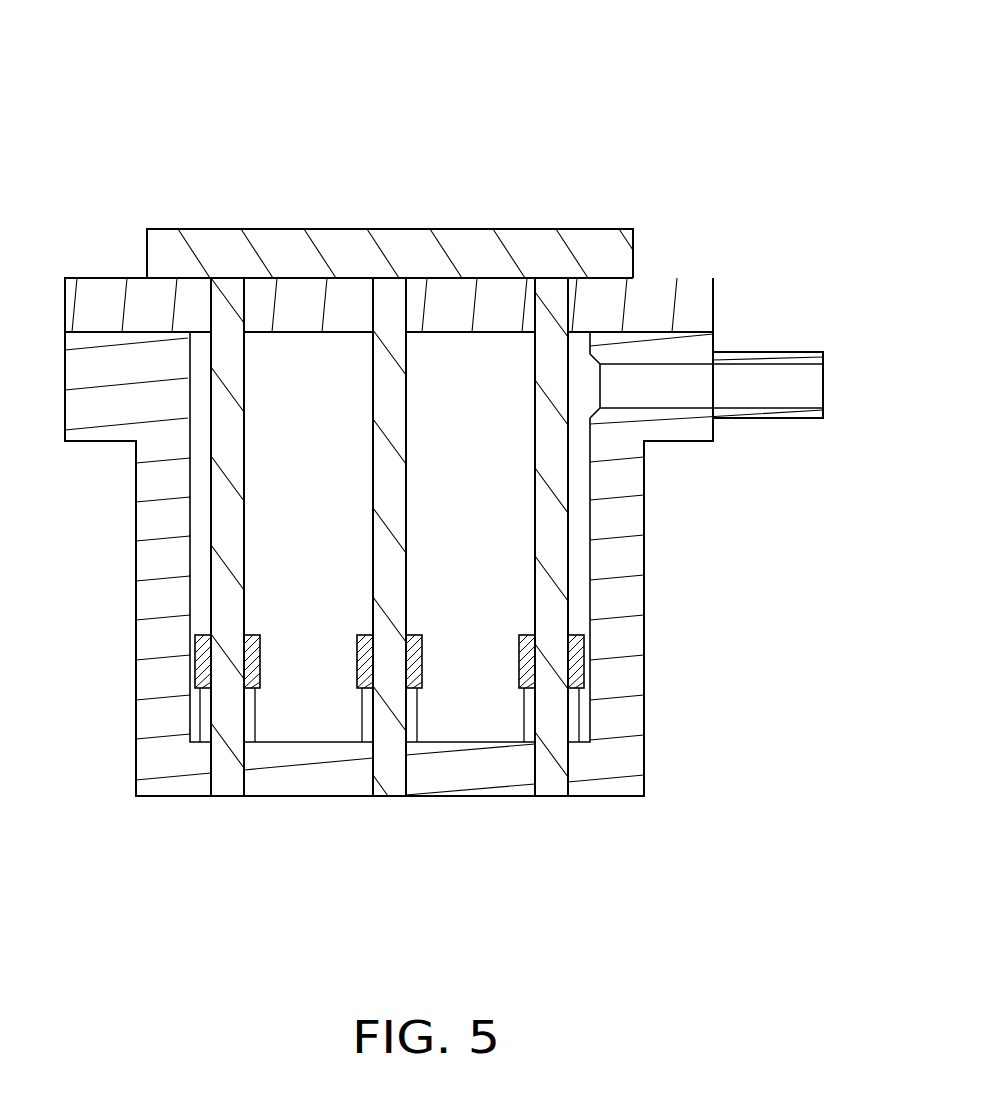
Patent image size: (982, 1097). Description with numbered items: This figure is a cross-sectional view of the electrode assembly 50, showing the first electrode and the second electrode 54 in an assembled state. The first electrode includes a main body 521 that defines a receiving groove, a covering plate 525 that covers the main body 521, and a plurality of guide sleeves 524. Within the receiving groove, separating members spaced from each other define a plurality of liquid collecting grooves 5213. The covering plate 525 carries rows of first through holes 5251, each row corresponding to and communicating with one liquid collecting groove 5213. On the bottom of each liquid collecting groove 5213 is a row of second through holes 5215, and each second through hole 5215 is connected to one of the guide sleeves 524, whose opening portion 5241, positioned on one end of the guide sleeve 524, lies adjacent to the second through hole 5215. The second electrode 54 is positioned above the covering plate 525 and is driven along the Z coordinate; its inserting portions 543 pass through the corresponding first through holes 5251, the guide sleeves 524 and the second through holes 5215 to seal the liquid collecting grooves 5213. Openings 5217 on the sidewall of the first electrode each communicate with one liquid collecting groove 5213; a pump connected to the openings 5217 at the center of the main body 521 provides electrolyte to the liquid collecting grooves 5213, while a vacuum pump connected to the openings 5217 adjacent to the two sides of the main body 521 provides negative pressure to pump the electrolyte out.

The electrode assembly 50 is at (346, 76).
The second electrode 54 is at (348, 239).
The covering plate 525 is at (695, 301).
The first through holes 5251 is at (570, 297).
The inserting portions 543 is at (550, 549).
The main body 521 is at (617, 684).
The liquid collecting grooves 5213 is at (200, 568).
The second through holes 5215 is at (210, 765).
The openings 5217 is at (773, 385).
The guide sleeves 524 is at (580, 650).
The opening portion 5241 is at (577, 723).